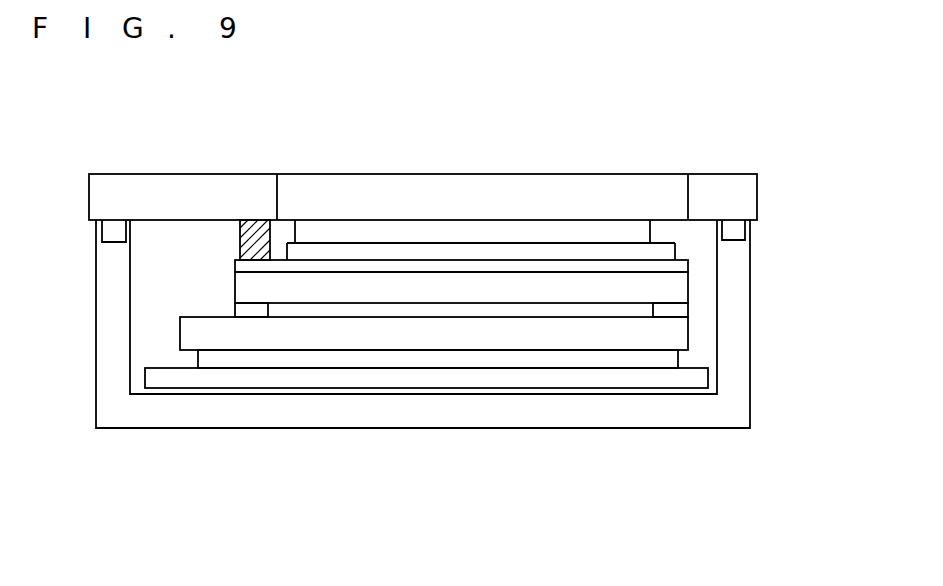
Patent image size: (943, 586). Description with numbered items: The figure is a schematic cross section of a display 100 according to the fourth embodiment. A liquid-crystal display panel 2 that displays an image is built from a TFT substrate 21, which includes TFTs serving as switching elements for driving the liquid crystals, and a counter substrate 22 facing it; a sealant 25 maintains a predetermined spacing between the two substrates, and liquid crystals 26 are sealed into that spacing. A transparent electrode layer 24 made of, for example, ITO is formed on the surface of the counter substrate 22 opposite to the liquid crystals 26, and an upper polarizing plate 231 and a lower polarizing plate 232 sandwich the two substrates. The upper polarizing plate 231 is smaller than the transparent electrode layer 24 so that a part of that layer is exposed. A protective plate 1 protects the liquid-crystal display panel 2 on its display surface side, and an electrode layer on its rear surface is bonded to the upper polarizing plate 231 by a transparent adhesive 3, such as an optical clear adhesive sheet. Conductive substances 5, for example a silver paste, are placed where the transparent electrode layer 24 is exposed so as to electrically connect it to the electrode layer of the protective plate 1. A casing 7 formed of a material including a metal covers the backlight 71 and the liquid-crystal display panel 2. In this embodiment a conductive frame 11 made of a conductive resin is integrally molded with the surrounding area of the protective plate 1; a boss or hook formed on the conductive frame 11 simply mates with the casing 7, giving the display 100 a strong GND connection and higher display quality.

The display 100 is at (304, 464).
The protective plate 1 is at (630, 203).
The conductive frame 11 is at (181, 205).
The casing 7 is at (737, 407).
The backlight 71 is at (527, 378).
The conductive substances 5 is at (257, 222).
The transparent adhesive 3 is at (562, 243).
The upper polarizing plate 231 is at (493, 243).
The lower polarizing plate 232 is at (618, 357).
The transparent electrode layer 24 is at (411, 262).
The liquid-crystal display panel 2 is at (512, 312).
The counter substrate 22 is at (675, 288).
The TFT substrate 21 is at (677, 335).
The sealant 25 is at (245, 310).
The liquid crystals 26 is at (337, 310).